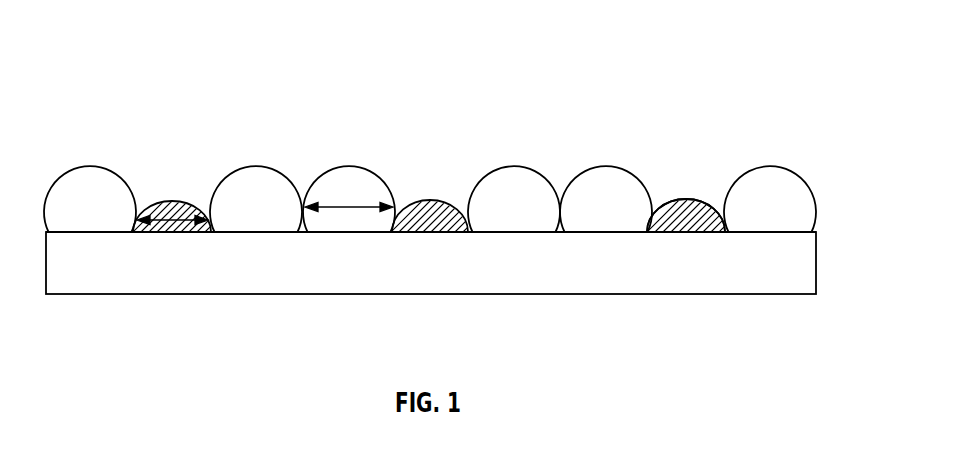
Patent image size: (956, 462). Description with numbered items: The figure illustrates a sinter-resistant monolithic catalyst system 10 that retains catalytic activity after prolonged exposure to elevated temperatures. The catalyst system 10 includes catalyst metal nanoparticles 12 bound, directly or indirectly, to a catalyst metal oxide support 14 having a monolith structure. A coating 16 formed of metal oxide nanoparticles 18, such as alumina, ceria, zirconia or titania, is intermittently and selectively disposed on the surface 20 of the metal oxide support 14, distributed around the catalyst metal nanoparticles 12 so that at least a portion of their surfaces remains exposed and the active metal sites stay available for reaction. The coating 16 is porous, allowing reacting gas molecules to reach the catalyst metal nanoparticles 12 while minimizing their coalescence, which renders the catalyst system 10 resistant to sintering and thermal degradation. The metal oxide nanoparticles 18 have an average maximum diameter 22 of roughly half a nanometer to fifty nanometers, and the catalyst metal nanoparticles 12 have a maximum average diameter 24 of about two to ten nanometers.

The catalyst system 10 is at (203, 90).
The catalyst metal nanoparticles 12 is at (442, 200).
The catalyst metal oxide support 14 is at (428, 275).
The coating 16 is at (647, 167).
The metal oxide nanoparticles 18 is at (275, 218).
The surface 20 is at (562, 233).
The average maximum diameter of the metal oxide nanoparticles 22 is at (352, 207).
The maximum average diameter of the catalyst metal nanoparticles 24 is at (174, 202).